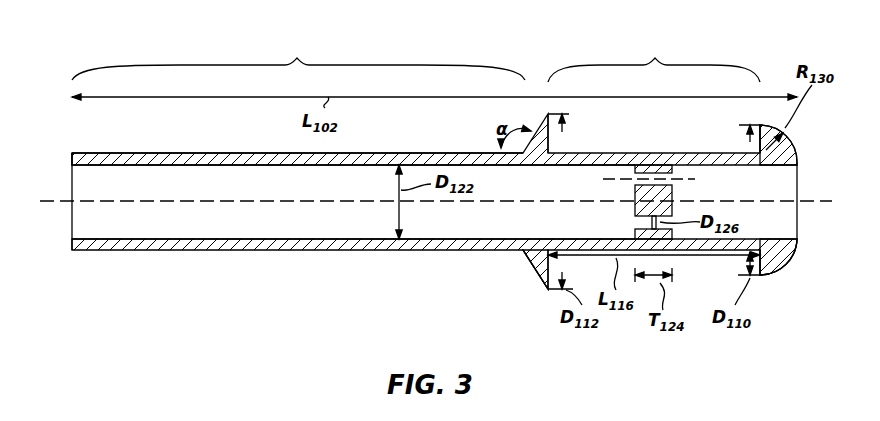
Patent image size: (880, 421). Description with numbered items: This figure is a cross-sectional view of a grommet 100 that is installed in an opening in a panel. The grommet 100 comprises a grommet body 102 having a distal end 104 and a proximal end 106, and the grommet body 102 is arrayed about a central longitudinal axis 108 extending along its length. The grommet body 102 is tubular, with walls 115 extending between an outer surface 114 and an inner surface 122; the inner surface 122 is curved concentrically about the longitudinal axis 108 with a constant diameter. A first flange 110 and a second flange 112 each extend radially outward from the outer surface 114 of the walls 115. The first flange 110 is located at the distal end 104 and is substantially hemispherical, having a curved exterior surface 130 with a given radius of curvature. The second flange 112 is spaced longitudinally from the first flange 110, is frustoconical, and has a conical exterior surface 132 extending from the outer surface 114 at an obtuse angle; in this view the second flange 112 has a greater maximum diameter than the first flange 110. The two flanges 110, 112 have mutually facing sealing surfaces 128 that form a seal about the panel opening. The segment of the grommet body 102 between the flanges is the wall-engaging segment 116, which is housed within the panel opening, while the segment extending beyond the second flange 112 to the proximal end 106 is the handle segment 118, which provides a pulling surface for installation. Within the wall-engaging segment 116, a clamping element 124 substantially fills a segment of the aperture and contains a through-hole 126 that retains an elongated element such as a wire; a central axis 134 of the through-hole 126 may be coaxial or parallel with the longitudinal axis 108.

The grommet 100 is at (125, 283).
The grommet body 102 is at (205, 251).
The distal end 104 is at (797, 247).
The proximal end 106 is at (72, 222).
The longitudinal axis 108 is at (800, 201).
The first flange 110 is at (778, 287).
The second flange 112 is at (526, 305).
The outer surface 114 is at (150, 153).
The walls 115 is at (72, 160).
The wall-engaging segment 116 is at (654, 61).
The handle segment 118 is at (298, 60).
The inner surface 122 is at (125, 165).
The clamping element 124 is at (676, 205).
The through-hole 126 is at (650, 222).
The sealing surfaces 128 is at (548, 152).
The exterior surface 130 is at (797, 158).
The exterior surface 132 is at (536, 270).
The central axis 134 is at (695, 179).